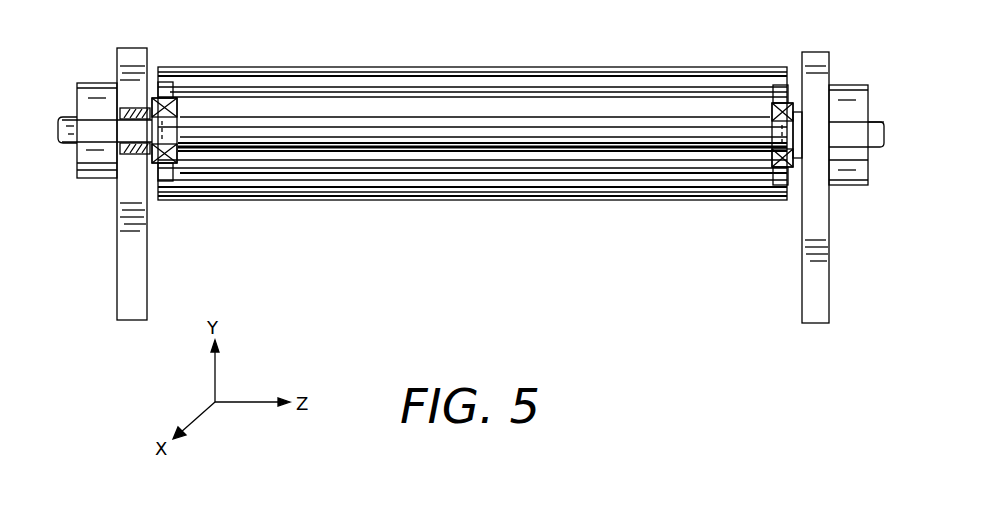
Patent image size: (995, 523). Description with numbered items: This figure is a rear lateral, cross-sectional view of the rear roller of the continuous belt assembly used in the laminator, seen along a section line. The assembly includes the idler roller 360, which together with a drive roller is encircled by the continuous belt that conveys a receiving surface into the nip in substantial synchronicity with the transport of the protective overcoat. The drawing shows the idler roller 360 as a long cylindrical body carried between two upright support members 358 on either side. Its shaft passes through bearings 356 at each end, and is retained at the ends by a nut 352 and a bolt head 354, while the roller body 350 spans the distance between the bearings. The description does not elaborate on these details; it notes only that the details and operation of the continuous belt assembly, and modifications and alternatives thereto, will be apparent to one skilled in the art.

The roller 350 is at (262, 127).
The nut 352 is at (97, 88).
The bolt 354 is at (70, 133).
The bearing 356 is at (176, 168).
The support plate 358 is at (132, 55).
The idler roller 360 is at (420, 75).